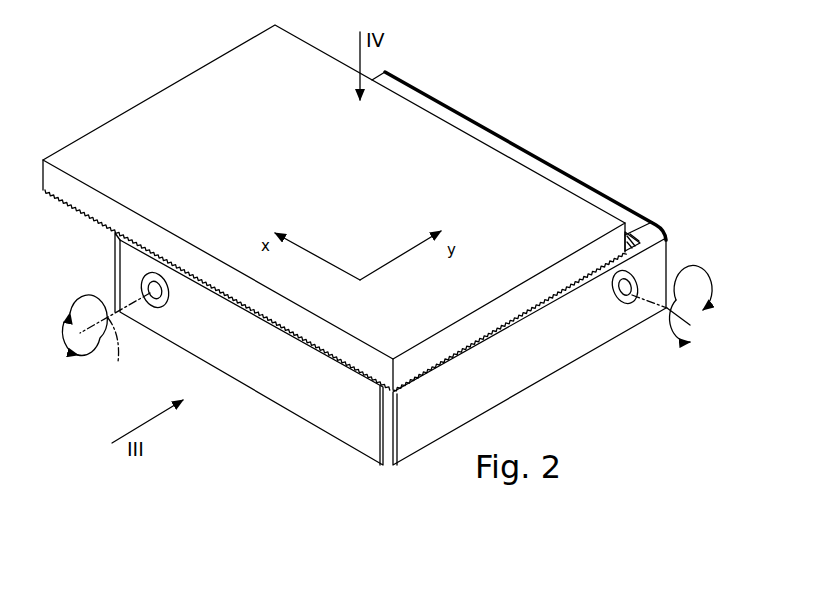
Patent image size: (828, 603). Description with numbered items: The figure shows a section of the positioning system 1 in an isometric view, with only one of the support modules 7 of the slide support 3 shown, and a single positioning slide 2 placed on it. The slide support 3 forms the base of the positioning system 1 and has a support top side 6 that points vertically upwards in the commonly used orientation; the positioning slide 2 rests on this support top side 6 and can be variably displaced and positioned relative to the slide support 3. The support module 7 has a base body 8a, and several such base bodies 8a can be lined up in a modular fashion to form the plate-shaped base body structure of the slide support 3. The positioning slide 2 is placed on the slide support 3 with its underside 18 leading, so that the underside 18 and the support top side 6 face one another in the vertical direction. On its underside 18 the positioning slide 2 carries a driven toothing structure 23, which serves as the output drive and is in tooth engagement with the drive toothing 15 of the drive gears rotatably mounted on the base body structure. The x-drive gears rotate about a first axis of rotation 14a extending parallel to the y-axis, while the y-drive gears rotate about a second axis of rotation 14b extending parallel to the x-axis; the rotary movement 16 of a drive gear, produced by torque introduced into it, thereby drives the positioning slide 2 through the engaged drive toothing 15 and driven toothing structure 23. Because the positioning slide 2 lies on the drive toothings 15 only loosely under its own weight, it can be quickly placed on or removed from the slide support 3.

The positioning system 1 is at (504, 94).
The positioning slide 2 is at (172, 112).
The slide support 3 is at (292, 418).
The support module 7 is at (249, 354).
The support top side 6 is at (553, 166).
The base body 8a is at (556, 368).
The first axis of rotation 14a is at (126, 329).
The second axis of rotation 14b is at (646, 308).
The drive toothing 15 is at (633, 236).
The rotary movement 16 is at (84, 308).
The underside 18 is at (216, 311).
The driven toothing structure 23 is at (335, 290).